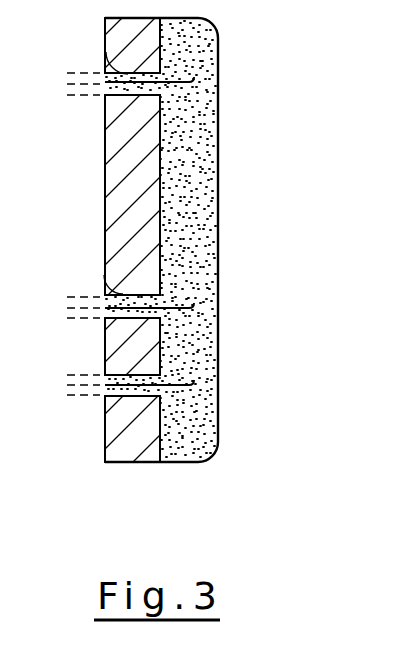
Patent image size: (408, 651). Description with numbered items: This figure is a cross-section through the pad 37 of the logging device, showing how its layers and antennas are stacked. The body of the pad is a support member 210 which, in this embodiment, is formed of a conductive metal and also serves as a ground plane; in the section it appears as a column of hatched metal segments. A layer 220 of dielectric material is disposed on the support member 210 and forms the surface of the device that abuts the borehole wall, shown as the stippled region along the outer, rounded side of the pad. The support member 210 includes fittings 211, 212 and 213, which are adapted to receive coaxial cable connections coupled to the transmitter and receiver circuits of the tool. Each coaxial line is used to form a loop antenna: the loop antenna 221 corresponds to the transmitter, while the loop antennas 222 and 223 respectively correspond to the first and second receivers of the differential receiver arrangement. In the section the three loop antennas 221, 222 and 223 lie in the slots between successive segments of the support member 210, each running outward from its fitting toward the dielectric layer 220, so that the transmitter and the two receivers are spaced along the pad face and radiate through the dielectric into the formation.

The pad 37 is at (235, 339).
The support member 210 is at (105, 140).
The fitting 211 is at (106, 52).
The fitting 212 is at (105, 273).
The fitting 213 is at (105, 399).
The layer of dielectric material 220 is at (218, 110).
The loop antenna 221 is at (218, 68).
The loop antenna 222 is at (218, 301).
The loop antenna 223 is at (218, 383).